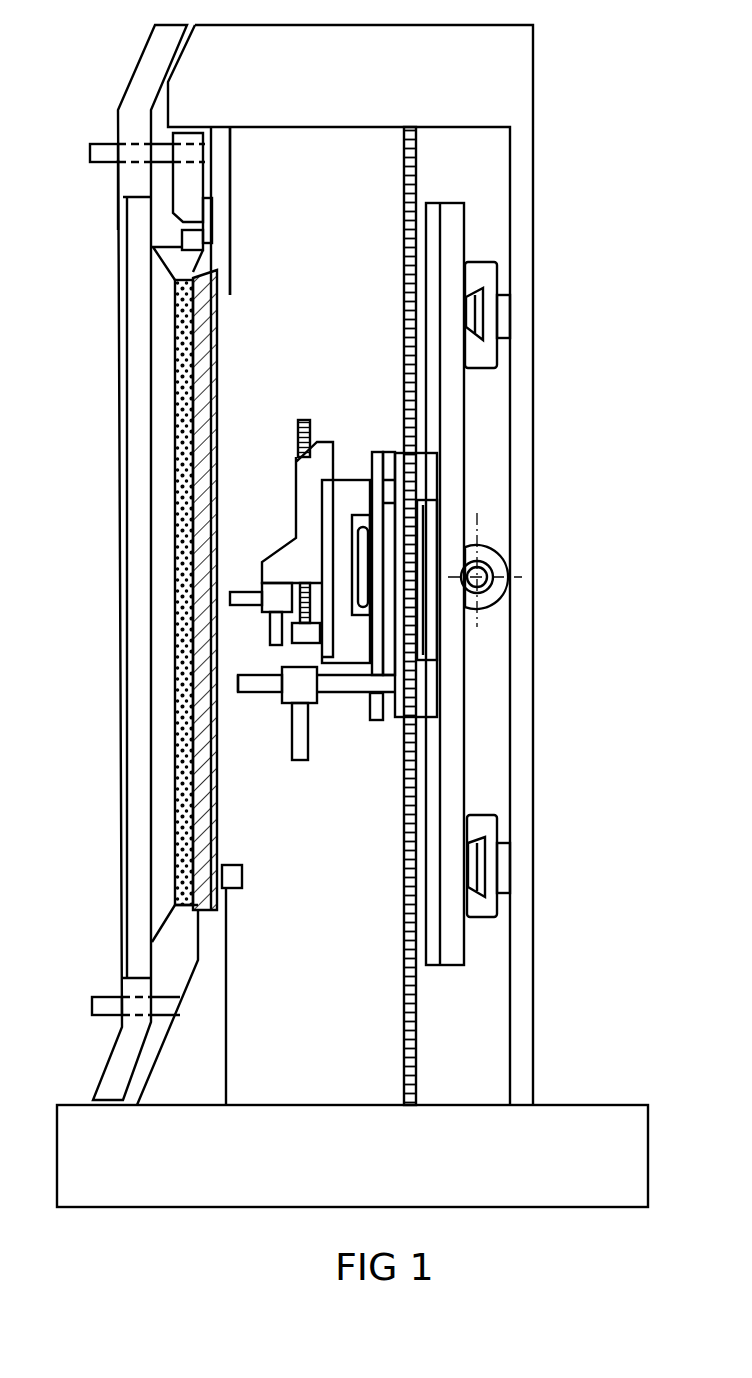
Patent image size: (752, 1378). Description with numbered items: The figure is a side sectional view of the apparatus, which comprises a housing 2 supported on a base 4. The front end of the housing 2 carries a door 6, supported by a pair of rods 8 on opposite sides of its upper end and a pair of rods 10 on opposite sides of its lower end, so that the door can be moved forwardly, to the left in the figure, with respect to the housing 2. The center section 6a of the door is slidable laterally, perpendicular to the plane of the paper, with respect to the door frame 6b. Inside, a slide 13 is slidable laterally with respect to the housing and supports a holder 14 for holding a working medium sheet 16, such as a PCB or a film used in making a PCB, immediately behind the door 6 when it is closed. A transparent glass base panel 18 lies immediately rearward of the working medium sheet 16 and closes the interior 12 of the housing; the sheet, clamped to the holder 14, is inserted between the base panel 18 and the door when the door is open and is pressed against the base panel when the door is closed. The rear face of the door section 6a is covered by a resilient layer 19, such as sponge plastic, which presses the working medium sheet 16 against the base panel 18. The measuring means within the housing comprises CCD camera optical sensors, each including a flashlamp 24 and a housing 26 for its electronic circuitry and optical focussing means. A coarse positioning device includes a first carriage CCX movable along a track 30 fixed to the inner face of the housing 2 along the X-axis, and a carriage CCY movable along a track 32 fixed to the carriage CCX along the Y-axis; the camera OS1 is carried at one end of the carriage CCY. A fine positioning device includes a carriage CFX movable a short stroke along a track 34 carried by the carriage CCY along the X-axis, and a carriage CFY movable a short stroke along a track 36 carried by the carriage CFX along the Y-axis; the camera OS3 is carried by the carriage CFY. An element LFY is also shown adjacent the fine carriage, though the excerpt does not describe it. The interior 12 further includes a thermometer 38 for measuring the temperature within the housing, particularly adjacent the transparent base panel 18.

The housing 2 is at (539, 82).
The base 4 is at (560, 1120).
The door 6 is at (129, 70).
The center section 6a is at (125, 790).
The door frame 6b is at (130, 180).
The rods 8 is at (90, 145).
The rods 10 is at (93, 1017).
The interior 12 is at (314, 219).
The slide 13 is at (188, 182).
The holder 14 is at (157, 246).
The working medium sheet 16 is at (195, 327).
The transparent glass base panel 18 is at (207, 382).
The resilient layer 19 is at (180, 480).
The flashlamp 24 is at (272, 627).
The housing 26 is at (272, 602).
The track 30 is at (488, 903).
The track 32 is at (433, 522).
The track 34 is at (363, 585).
The track 36 is at (328, 515).
The thermometer 38 is at (243, 872).
The carriage CFY is at (307, 476).
The carriage CFX is at (347, 480).
The first carriage CCX is at (452, 535).
The carriage CCY is at (427, 685).
The Y lead screw LFY is at (310, 418).
The optical sensor OS1 is at (253, 690).
The optical sensor OS3 is at (235, 590).